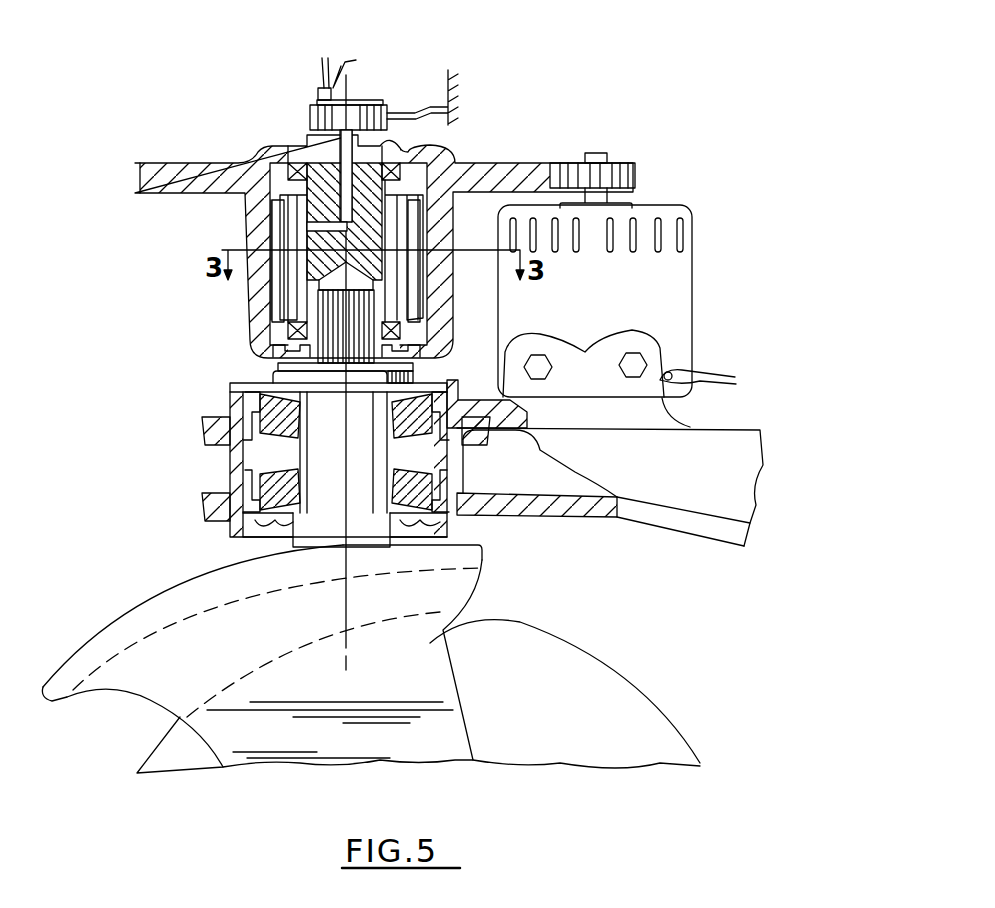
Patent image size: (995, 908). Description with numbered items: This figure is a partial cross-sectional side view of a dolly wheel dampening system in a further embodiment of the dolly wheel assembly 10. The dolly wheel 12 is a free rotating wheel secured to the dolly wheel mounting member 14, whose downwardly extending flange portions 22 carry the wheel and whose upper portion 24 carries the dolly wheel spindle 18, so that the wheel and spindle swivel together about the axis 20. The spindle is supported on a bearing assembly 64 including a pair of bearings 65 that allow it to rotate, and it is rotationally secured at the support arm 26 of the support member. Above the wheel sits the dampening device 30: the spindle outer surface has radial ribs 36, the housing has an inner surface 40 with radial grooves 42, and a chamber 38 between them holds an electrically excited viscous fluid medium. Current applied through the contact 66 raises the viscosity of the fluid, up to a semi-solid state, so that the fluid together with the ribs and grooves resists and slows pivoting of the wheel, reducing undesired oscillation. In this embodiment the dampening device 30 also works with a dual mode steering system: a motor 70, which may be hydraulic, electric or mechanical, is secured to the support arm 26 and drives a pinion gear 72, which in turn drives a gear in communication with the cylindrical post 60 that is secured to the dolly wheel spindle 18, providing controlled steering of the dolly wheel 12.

The dolly wheel assembly 10 is at (588, 79).
The dolly wheel 12 is at (572, 664).
The dolly wheel mounting member 14 is at (473, 620).
The dolly wheel spindle 18 is at (308, 447).
The axis 20 is at (352, 93).
The flange portions 22 is at (217, 737).
The upper portion 24 is at (153, 596).
The support arm 26 is at (663, 487).
The dampening device 30 is at (472, 157).
The radial ribs 36 is at (300, 224).
The chamber 38 is at (413, 305).
The inner surface 40 is at (270, 283).
The radial grooves 42 is at (276, 241).
The cylindrical post 60 is at (392, 152).
The bearing assembly 64 is at (293, 158).
The bearings 65 is at (458, 448).
The contact 66 is at (320, 86).
The motor 70 is at (690, 301).
The pinion gear 72 is at (636, 178).